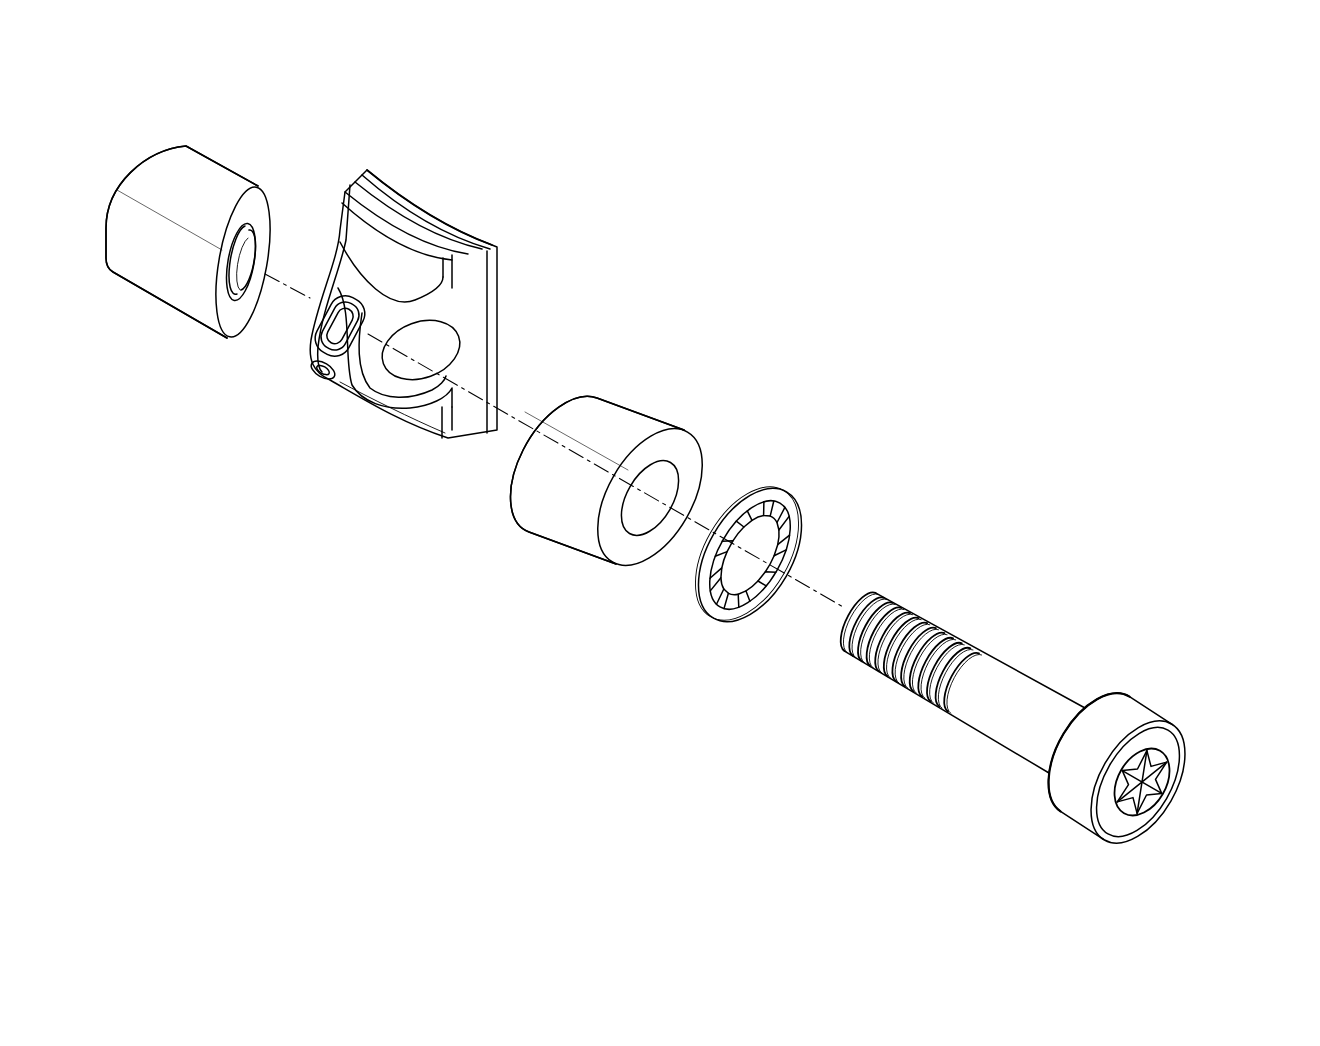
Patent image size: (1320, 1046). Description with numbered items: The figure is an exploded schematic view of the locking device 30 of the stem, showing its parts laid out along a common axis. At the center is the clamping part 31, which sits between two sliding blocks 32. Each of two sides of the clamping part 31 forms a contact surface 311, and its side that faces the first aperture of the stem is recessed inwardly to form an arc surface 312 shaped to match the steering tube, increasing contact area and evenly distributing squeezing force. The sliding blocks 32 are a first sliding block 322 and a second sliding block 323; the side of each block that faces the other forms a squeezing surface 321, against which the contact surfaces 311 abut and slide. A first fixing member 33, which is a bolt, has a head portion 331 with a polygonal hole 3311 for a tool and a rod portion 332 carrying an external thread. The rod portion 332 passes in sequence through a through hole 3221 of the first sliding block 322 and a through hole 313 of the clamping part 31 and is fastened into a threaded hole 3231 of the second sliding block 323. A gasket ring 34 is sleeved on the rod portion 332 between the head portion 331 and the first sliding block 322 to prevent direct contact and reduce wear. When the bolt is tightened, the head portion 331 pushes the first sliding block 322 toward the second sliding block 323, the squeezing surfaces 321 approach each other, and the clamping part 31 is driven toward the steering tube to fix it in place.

The locking device 30 is at (103, 98).
The clamping part 31 is at (368, 231).
The contact surface 311 is at (327, 268).
The arc surface 312 is at (445, 230).
The through hole 313 is at (442, 342).
The sliding blocks 32 is at (365, 565).
The squeezing surface 321 is at (585, 403).
The first sliding block 322 is at (540, 498).
The through hole 3221 is at (641, 530).
The second sliding block 323 is at (188, 300).
The threaded hole 3231 is at (262, 240).
The first fixing member 33 is at (1174, 642).
The head portion 331 is at (1120, 716).
The polygonal hole 3311 is at (1153, 794).
The rod portion 332 is at (1007, 678).
The gasket ring 34 is at (783, 503).